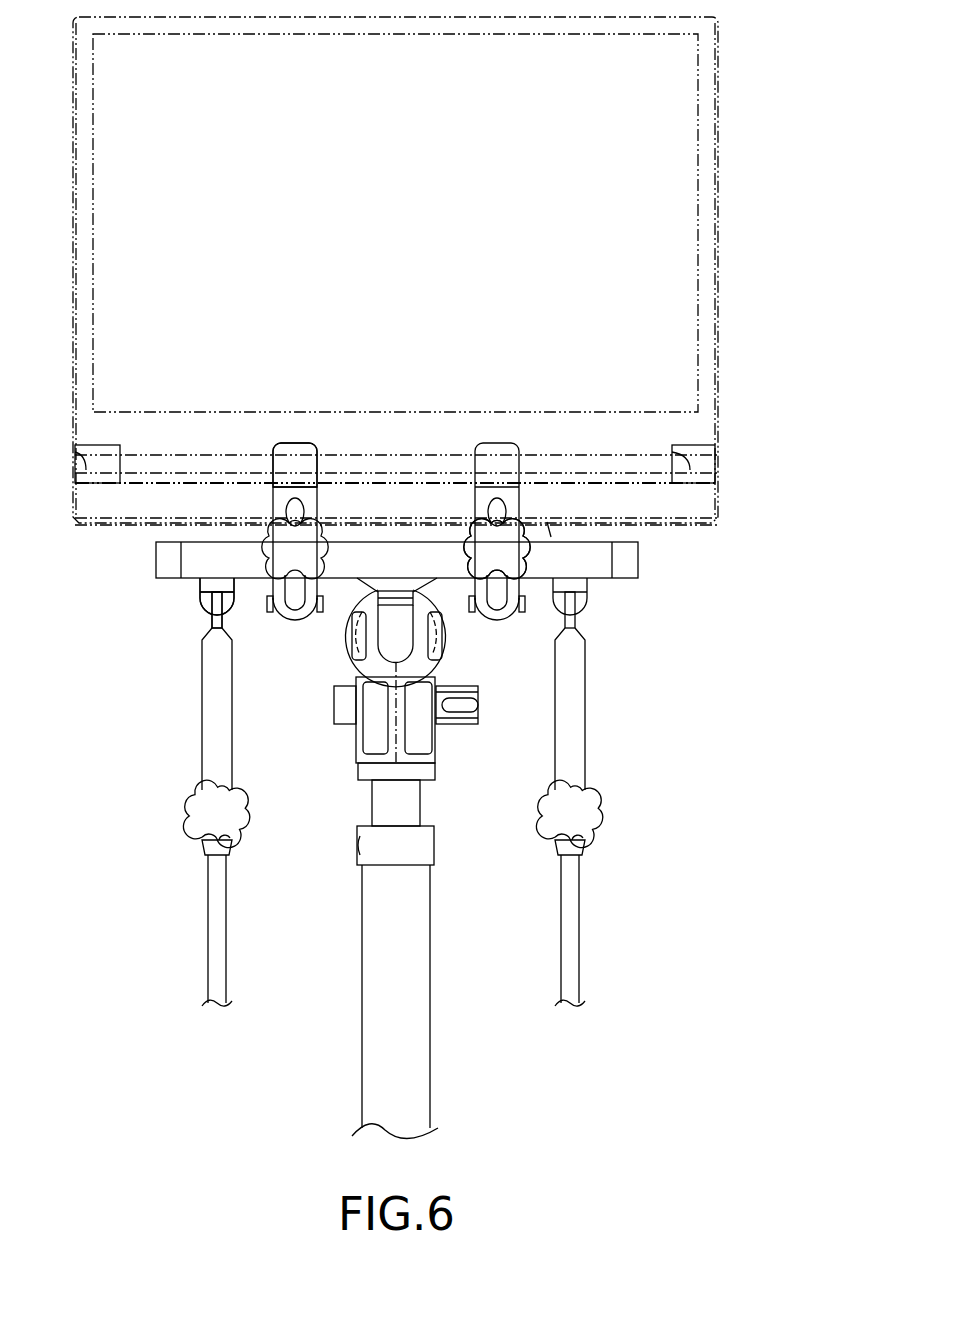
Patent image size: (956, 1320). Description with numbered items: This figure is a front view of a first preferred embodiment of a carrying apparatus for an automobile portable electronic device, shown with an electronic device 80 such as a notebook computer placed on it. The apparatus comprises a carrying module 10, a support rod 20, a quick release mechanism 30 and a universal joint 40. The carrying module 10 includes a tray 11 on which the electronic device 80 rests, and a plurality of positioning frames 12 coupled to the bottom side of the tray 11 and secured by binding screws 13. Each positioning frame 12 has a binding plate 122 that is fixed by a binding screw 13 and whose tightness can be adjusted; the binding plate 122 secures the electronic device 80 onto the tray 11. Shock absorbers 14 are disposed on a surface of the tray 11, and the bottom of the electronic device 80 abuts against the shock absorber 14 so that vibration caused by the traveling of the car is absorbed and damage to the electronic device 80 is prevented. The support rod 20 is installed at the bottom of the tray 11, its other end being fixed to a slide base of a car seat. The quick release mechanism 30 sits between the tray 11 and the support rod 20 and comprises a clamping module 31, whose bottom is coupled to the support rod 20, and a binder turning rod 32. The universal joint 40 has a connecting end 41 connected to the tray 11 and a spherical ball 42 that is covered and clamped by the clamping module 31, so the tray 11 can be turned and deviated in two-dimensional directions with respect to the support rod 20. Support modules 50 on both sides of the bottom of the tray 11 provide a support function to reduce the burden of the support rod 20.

The carrying module 10 is at (642, 549).
The tray 11 is at (603, 568).
The positioning frame 12 is at (262, 500).
The binding plate 122 is at (290, 467).
The binding screw 13 is at (262, 556).
The shock absorber 14 is at (532, 532).
The support rod 20 is at (437, 1035).
The quick release mechanism 30 is at (408, 742).
The clamping module 31 is at (358, 747).
The binder turning rod 32 is at (484, 704).
The universal joint 40 is at (346, 654).
The connecting end 41 is at (378, 612).
The spherical ball 42 is at (377, 664).
The support module 50 is at (207, 911).
The electronic device 80 is at (712, 143).